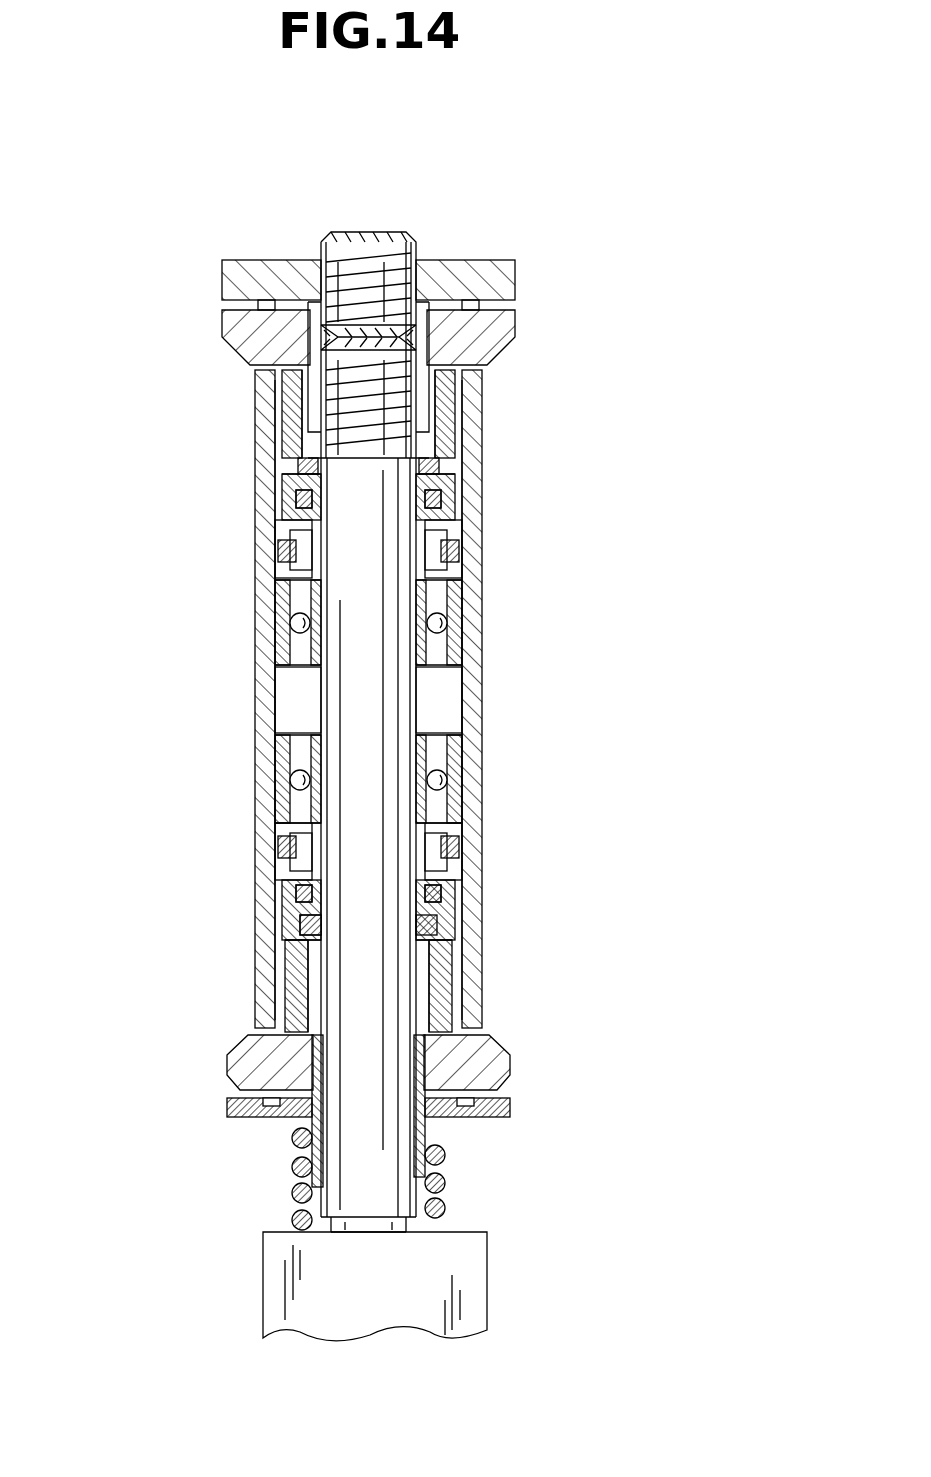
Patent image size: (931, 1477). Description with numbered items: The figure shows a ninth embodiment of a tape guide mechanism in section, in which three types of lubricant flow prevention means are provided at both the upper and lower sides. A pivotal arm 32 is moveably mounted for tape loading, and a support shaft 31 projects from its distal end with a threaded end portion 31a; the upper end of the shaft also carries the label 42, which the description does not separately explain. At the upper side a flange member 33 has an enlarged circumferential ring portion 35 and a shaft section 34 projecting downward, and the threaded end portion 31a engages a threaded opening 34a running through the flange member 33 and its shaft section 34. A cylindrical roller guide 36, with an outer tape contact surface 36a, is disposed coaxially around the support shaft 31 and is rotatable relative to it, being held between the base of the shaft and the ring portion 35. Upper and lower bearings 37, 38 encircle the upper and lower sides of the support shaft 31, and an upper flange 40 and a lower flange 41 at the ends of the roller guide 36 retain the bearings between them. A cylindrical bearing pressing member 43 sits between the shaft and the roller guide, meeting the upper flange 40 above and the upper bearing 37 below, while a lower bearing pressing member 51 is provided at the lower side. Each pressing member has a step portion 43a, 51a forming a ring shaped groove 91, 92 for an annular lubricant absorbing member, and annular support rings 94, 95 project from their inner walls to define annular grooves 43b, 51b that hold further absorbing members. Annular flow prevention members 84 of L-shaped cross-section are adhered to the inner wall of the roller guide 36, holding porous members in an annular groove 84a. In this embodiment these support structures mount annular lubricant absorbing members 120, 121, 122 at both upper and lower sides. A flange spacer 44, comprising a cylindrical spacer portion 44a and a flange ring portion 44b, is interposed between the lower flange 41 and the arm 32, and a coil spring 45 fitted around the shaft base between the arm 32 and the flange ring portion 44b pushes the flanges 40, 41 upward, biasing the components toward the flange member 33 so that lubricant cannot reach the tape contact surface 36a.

The support shaft 31 is at (400, 692).
The threaded end portion 31a is at (478, 385).
The pivotal arm 32 is at (275, 1280).
The flange member 33 is at (497, 236).
The shaft section 34 is at (405, 340).
The threaded opening 34a is at (300, 380).
The ring portion 35 is at (492, 276).
The cylindrical roller guide 36 is at (212, 700).
The tape contact surface 36a is at (257, 772).
The upper bearing 37 is at (470, 616).
The lower bearing 38 is at (472, 770).
The upper flange 40 is at (240, 328).
The lower flange 41 is at (240, 1060).
The threaded portion 42 is at (375, 252).
The bearing pressing member 43 is at (440, 430).
The step portion 43a is at (290, 522).
The annular groove 43b is at (300, 476).
The flange spacer 44 is at (256, 1128).
The cylindrical spacer portion 44a is at (312, 1147).
The flange ring portion 44b is at (487, 1108).
The coil spring 45 is at (448, 1180).
The lower bearing pressing member 51 is at (450, 985).
The step portion 51a is at (290, 885).
The annular groove 51b is at (290, 948).
The flow prevention member 84 is at (284, 548).
The annular groove 84a is at (282, 575).
The ring shaped groove 91 is at (302, 502).
The ring shaped groove 92 is at (300, 923).
The annular support ring 94 is at (298, 462).
The annular support ring 95 is at (290, 975).
The annular lubricant absorbing member 120 is at (455, 552).
The annular lubricant absorbing member 121 is at (442, 508).
The annular lubricant absorbing member 122 is at (440, 468).